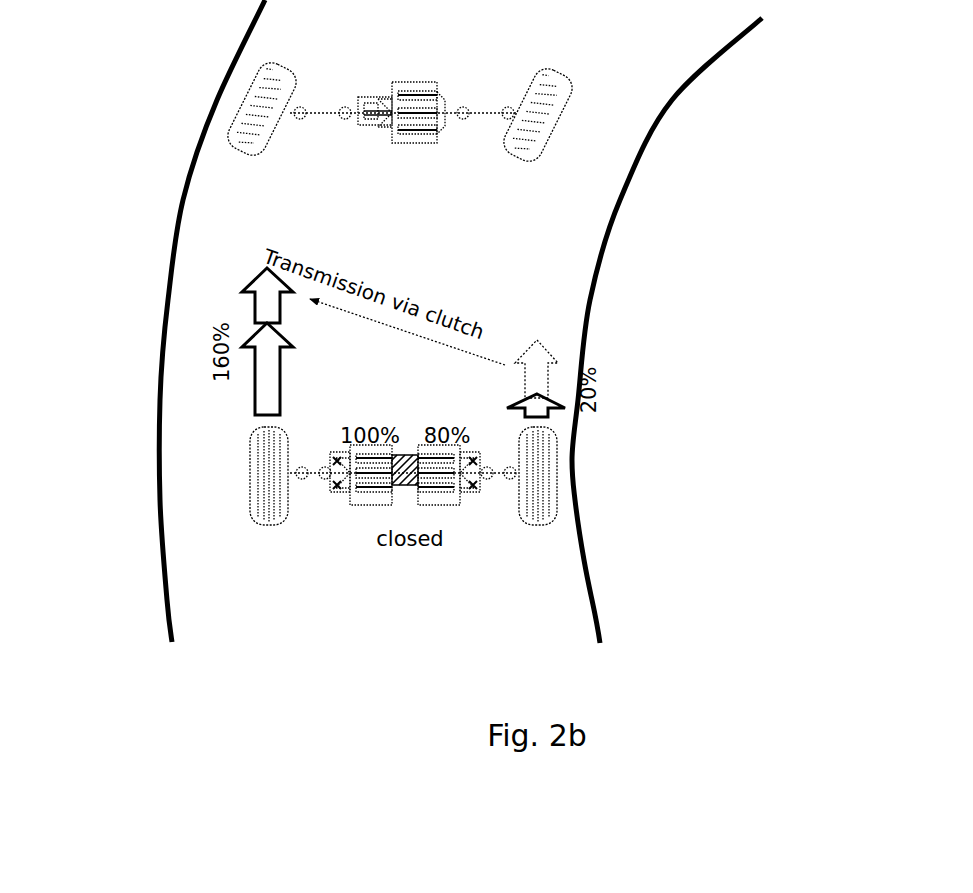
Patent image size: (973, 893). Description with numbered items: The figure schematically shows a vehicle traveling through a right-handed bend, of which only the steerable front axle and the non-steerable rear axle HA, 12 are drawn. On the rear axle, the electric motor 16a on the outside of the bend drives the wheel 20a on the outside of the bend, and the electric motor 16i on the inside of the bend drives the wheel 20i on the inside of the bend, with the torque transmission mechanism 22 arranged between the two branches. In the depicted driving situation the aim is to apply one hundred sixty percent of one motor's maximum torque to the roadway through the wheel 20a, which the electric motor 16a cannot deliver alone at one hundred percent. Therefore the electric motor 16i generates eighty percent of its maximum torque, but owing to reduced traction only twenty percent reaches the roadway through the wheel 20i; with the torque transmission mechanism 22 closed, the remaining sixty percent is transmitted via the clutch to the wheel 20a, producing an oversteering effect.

The rear axle HA 12 is at (487, 467).
The wheel on the outside of the bend 20a is at (262, 472).
The wheel on the inside of the bend 20i is at (548, 468).
The electric motor on the outside of the bend 16a is at (355, 503).
The electric motor on the inside of the bend 16i is at (455, 503).
The torque transmission mechanism 22 is at (405, 455).